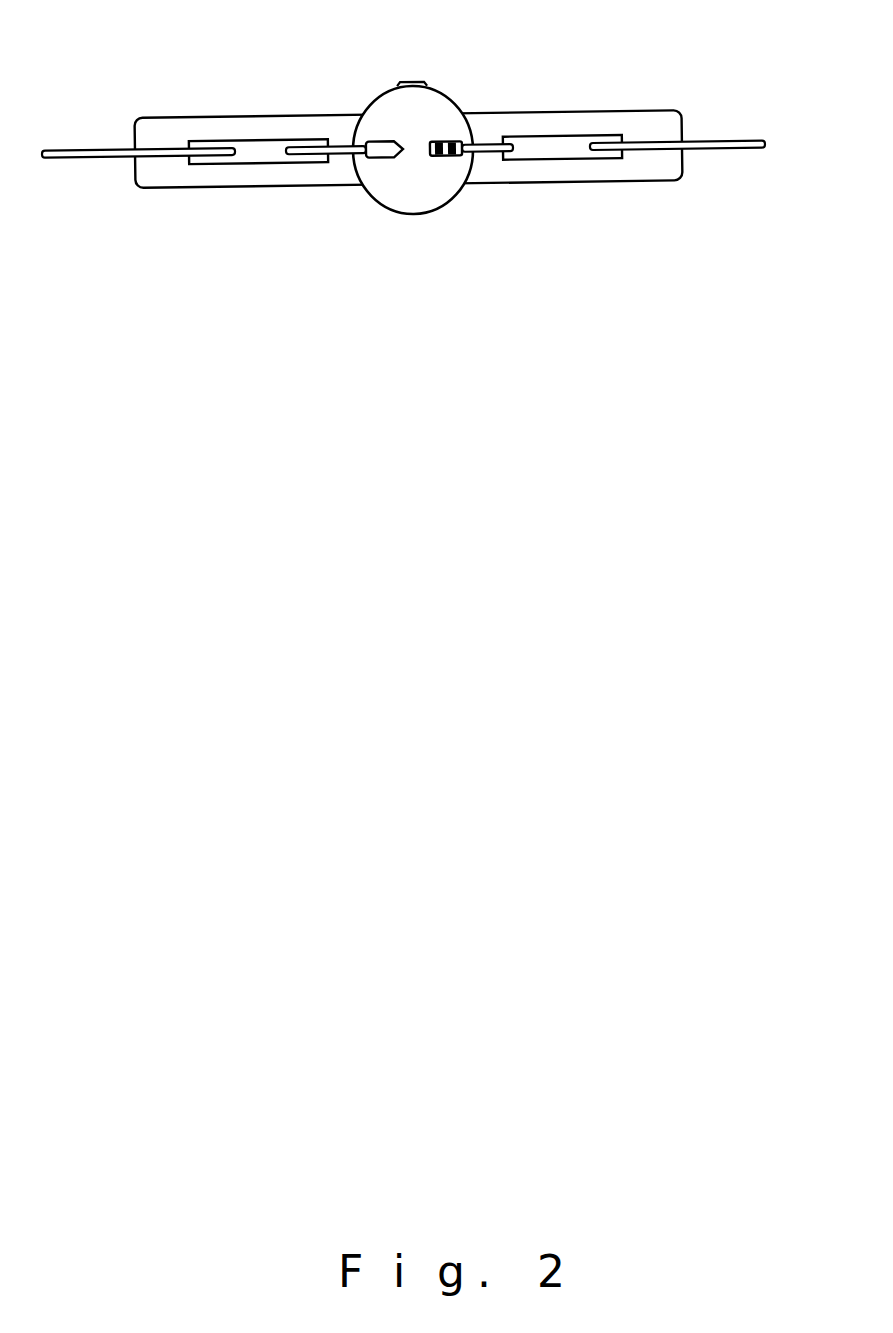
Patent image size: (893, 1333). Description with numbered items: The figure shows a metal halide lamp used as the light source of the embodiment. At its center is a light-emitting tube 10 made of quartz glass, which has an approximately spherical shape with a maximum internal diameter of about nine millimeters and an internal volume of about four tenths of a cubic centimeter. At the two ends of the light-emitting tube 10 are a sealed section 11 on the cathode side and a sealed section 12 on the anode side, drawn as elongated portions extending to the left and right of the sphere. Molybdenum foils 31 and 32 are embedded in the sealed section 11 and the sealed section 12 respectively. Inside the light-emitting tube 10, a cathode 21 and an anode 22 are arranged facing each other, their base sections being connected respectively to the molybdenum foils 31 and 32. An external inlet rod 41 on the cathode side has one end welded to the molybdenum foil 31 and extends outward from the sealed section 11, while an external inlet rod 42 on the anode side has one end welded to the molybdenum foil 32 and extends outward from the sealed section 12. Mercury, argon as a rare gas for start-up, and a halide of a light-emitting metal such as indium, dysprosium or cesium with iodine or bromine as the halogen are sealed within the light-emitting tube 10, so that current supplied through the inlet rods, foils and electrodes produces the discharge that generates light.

The light-emitting tube 10 is at (448, 94).
The sealed section on the cathode side 11 is at (598, 122).
The sealed section on the anode side 12 is at (270, 128).
The cathode 21 is at (445, 143).
The anode 22 is at (385, 142).
The molybdenum foil 31 is at (573, 150).
The molybdenum foil 32 is at (262, 155).
The external inlet rod on the cathode side 41 is at (742, 135).
The external inlet rod on the anode side 42 is at (82, 145).